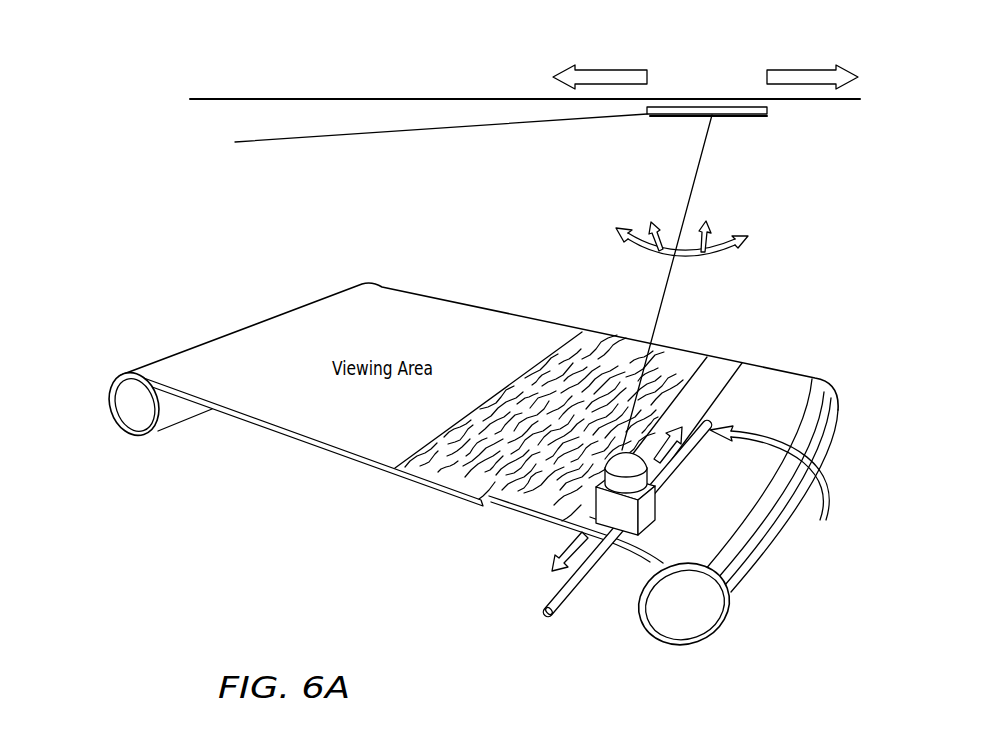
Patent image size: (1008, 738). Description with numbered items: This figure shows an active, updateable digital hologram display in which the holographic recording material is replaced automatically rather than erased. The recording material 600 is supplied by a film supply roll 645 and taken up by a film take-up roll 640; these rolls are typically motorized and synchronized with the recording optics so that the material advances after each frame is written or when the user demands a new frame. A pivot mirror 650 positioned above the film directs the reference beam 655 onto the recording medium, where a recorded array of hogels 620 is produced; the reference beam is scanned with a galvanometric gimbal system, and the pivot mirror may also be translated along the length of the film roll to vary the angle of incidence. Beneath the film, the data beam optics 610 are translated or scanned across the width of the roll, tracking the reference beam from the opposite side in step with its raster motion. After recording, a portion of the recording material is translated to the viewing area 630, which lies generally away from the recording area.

The recording material 600 is at (763, 367).
The data beam optics 610 is at (596, 508).
The recorded array of hogels 620 is at (593, 328).
The viewing area 630 is at (440, 302).
The film take-up roll 640 is at (122, 422).
The film supply roll 645 is at (643, 623).
The pivot mirror 650 is at (753, 116).
The reference beam 655 is at (690, 193).